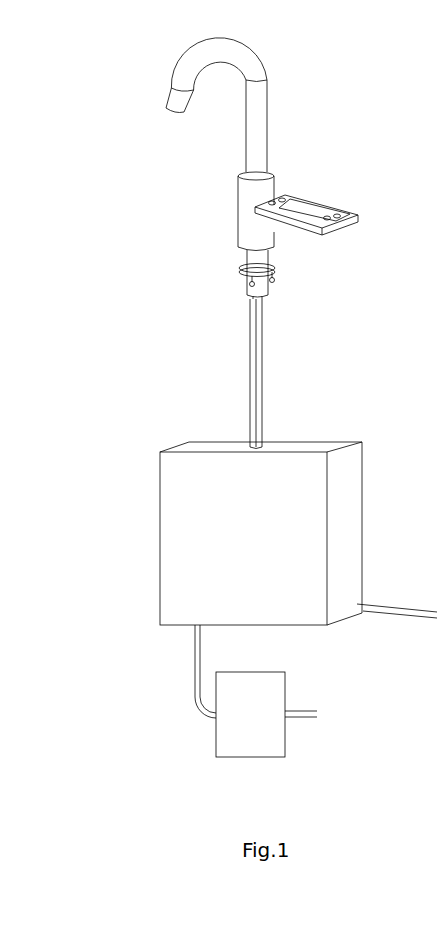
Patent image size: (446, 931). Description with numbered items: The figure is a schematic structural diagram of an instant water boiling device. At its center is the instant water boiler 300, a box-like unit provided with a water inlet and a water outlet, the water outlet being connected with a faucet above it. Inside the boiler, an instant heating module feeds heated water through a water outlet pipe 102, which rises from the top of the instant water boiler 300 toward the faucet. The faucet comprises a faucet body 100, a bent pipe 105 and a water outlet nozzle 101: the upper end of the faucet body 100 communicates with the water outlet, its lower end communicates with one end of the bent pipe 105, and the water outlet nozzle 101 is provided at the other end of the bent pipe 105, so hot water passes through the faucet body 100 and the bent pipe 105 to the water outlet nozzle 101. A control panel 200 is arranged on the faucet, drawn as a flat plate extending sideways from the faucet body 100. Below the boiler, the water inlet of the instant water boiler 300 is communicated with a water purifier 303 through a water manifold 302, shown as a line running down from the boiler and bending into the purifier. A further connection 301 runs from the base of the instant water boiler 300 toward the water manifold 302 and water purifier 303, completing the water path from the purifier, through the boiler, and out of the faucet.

The faucet body 100 is at (243, 148).
The water outlet nozzle 101 is at (173, 117).
The water outlet pipe 102 is at (248, 340).
The bent pipe 105 is at (265, 55).
The control panel 200 is at (360, 226).
The instant water boiler 300 is at (160, 538).
The connecting wire 301 is at (192, 658).
The water manifold 302 is at (197, 707).
The water purifier 303 is at (250, 757).